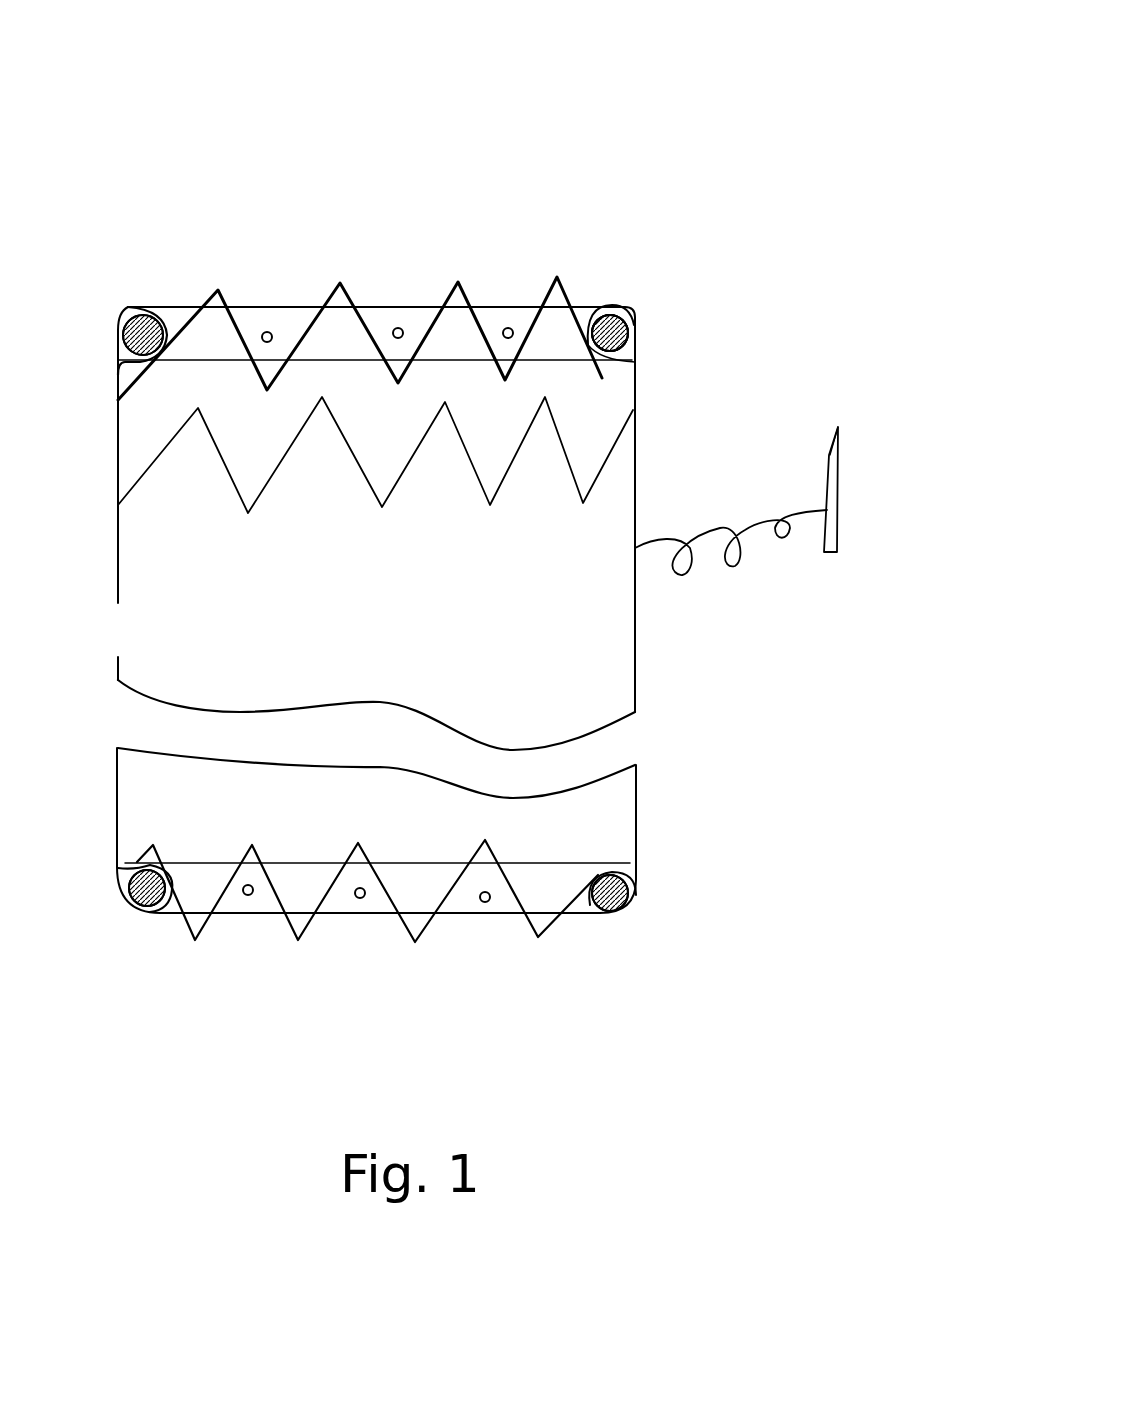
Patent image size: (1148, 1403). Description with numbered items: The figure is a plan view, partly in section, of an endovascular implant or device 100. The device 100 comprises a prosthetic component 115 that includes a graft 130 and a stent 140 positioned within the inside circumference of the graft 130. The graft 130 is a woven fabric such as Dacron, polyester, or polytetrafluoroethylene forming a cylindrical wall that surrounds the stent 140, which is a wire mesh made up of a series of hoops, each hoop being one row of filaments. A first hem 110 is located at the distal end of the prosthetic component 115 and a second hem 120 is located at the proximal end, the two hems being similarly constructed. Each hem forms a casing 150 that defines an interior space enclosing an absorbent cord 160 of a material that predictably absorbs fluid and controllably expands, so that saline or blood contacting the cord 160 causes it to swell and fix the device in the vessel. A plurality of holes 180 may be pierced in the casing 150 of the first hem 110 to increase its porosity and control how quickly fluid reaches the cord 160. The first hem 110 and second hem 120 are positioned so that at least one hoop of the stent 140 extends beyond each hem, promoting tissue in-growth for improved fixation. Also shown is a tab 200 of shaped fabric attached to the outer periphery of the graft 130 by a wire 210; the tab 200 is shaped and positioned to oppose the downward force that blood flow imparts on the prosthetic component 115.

The endovascular implant or device 100 is at (716, 70).
The first hem 110 is at (283, 307).
The prosthetic component 115 is at (648, 393).
The second hem 120 is at (243, 913).
The graft 130 is at (628, 670).
The stent 140 is at (460, 283).
The casing 150 is at (610, 305).
The absorbent cord 160 is at (632, 322).
The holes 180 is at (398, 328).
The tab 200 is at (840, 467).
The wire 210 is at (717, 533).